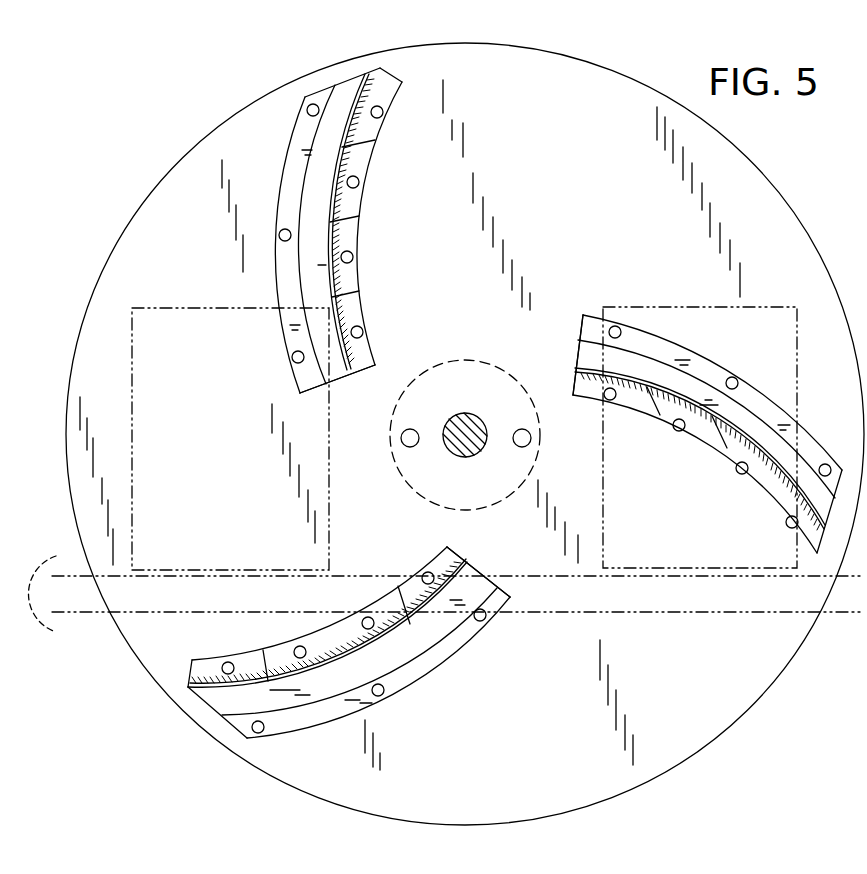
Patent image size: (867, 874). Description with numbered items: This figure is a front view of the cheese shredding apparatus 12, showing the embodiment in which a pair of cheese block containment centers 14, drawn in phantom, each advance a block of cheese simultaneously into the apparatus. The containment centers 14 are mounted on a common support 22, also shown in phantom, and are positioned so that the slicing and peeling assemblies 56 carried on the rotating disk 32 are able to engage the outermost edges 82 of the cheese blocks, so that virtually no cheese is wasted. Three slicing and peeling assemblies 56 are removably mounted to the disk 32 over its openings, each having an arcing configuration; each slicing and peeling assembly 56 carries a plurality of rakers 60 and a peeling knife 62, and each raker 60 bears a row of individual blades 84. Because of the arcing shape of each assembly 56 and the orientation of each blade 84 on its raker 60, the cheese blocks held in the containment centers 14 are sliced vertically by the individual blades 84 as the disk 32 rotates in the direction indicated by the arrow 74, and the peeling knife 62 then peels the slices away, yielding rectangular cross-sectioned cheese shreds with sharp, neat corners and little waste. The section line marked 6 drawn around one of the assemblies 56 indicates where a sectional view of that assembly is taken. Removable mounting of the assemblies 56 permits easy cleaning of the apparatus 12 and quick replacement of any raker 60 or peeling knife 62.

The cheese shredding apparatus 12 is at (107, 190).
The cheese block containment center 14 is at (133, 426).
The common support 22 is at (620, 605).
The disk 32 is at (540, 233).
The slicing and peeling assembly 56 is at (355, 383).
The raker 60 is at (362, 305).
The peeling knife 62 is at (318, 205).
The direction of rotation 74 is at (435, 117).
The outermost edges 82 is at (138, 315).
The blade 84 is at (657, 412).
The section line 6- 6 is at (413, 100).